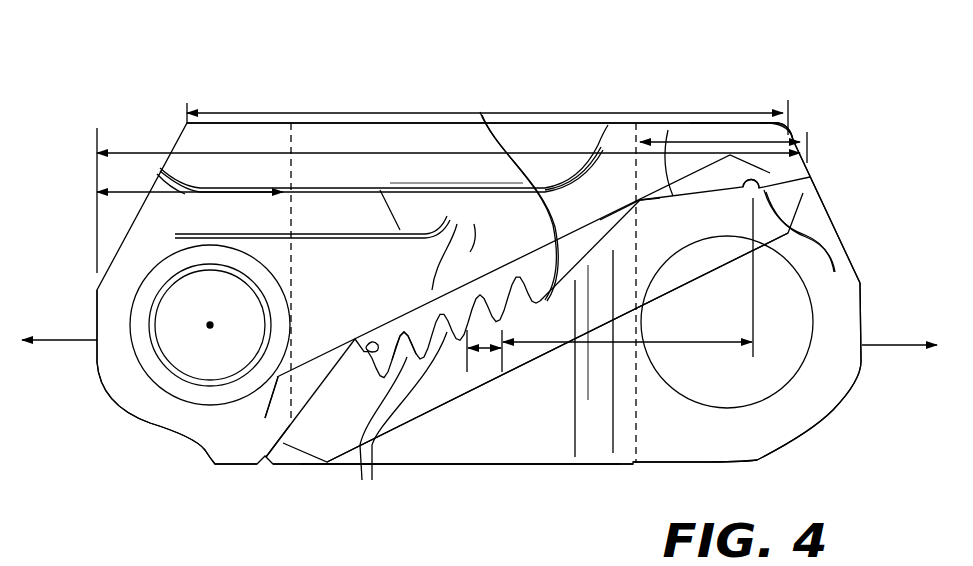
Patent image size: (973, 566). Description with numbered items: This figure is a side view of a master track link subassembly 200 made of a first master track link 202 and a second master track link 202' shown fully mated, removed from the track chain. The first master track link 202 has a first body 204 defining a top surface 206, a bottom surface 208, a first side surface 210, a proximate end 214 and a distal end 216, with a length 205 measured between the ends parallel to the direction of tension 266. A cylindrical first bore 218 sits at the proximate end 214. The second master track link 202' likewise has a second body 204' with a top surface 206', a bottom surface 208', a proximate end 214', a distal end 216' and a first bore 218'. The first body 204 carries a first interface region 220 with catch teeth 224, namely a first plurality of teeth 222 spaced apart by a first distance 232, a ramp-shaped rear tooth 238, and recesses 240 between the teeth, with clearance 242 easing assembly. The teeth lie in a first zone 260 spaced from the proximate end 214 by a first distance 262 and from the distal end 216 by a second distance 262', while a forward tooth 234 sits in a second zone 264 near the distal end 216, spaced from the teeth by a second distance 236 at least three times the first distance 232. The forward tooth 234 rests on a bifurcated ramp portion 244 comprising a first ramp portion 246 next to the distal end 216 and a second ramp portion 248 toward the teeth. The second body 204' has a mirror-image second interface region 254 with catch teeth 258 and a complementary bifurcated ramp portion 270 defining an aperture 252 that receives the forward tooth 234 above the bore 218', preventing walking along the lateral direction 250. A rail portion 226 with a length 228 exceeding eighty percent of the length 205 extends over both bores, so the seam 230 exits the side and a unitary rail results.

The master track link subassembly 200 is at (515, 84).
The first master track link 202 is at (487, 80).
The second master track link 202' is at (453, 503).
The first body 204 is at (482, 84).
The second body 204' is at (460, 502).
The length 205 is at (790, 133).
The top surface 206 is at (309, 235).
The top surface 206' is at (845, 211).
The bottom surface 208 is at (177, 453).
The bottom surface 208' is at (710, 450).
The first side surface 210 is at (316, 226).
The proximate end 214 is at (416, 245).
The proximate end 214' is at (891, 321).
The distal end 216 is at (828, 124).
The distal end 216' is at (272, 458).
The first bore 218 is at (235, 324).
The first bore 218' is at (739, 356).
The first interface region 220 is at (480, 112).
The first plurality of teeth 222 is at (448, 220).
The catch teeth 224 is at (458, 310).
The rail portion 226 is at (556, 120).
The length 228 is at (643, 120).
The seam 230 is at (838, 218).
The first distance 232 is at (465, 393).
The forward tooth 234 is at (748, 196).
The second distance 236 is at (668, 343).
The rear tooth 238 is at (548, 197).
The recesses 240 is at (366, 347).
The clearance 242 is at (387, 328).
The bifurcated ramp portion 244 is at (637, 198).
The first ramp portion 246 is at (668, 130).
The second ramp portion 248 is at (597, 250).
The lateral direction 250 is at (211, 322).
The aperture 252 is at (808, 241).
The second interface region 254 is at (572, 400).
The catch teeth 258 is at (505, 344).
The first zone 260 is at (392, 215).
The first distance 262 is at (190, 218).
The second distance 262' is at (720, 97).
The second zone 264 is at (703, 133).
The direction of tension 266 is at (484, 380).
The bifurcated ramp portion 270 is at (635, 213).